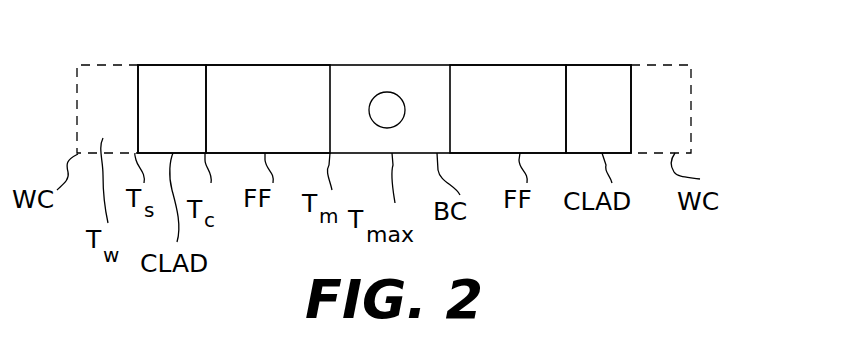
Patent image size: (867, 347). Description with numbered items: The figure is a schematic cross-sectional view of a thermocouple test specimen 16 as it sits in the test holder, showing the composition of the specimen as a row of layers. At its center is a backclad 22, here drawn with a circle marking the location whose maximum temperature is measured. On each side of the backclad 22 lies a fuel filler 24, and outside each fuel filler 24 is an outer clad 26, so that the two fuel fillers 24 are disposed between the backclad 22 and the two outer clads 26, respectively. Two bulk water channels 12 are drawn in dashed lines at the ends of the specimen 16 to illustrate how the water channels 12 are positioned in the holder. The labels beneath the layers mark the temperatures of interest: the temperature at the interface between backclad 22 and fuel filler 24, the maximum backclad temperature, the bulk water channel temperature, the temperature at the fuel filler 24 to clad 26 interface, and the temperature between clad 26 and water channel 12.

The bulk water channel 12 is at (384, 109).
The thermocouple test specimen 16 is at (548, 62).
The backclad 22 is at (406, 111).
The fuel filler 24 is at (386, 109).
The outer clad 26 is at (384, 109).